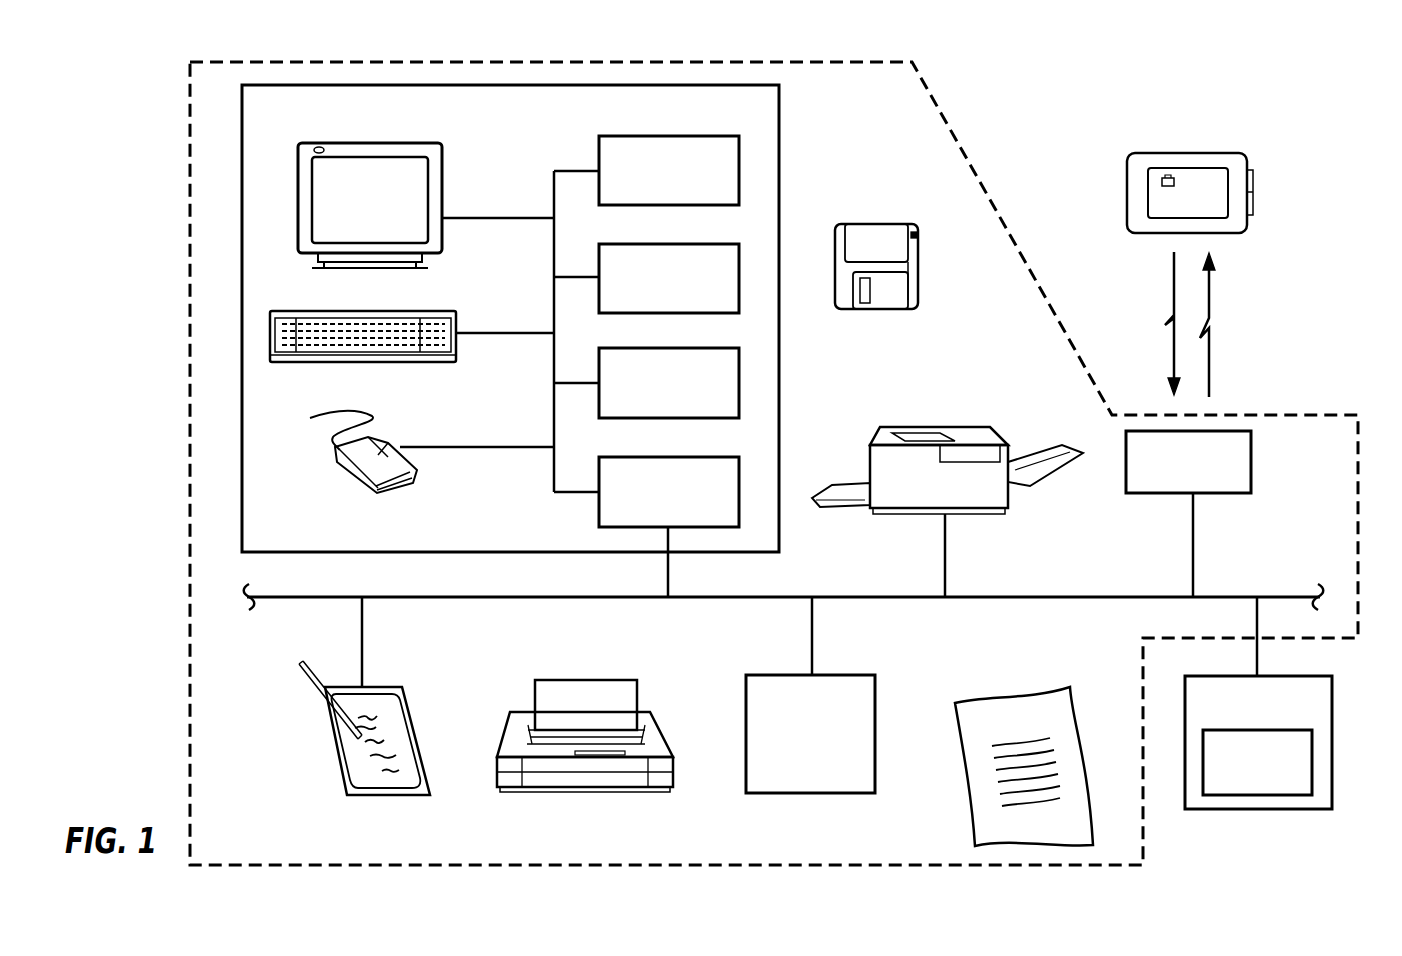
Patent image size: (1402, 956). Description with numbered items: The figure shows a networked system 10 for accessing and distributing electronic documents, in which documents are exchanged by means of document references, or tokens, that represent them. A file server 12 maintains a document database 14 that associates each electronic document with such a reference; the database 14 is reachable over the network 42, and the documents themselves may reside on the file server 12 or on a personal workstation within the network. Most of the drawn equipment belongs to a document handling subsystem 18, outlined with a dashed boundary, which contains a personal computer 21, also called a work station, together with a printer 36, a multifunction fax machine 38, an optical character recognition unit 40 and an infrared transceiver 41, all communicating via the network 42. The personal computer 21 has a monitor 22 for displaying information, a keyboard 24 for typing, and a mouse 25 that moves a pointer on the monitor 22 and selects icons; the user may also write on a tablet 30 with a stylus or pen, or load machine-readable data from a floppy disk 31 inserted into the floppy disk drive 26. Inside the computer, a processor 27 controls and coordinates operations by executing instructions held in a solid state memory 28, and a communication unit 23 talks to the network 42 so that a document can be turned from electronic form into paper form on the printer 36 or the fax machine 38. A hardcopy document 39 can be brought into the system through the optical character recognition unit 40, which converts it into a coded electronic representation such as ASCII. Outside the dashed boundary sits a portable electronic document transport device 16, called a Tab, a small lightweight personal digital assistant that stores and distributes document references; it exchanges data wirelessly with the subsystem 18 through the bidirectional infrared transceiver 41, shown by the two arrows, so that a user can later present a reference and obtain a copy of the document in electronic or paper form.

The networked system 10 is at (1308, 114).
The file server 12 is at (1332, 713).
The document database 14 is at (1312, 768).
The portable electronic document transport device 16 is at (1182, 153).
The document handling subsystem 18 is at (952, 128).
The personal computer 21 is at (779, 152).
The monitor 22 is at (398, 143).
The communication unit 23 is at (690, 457).
The keyboard 24 is at (432, 311).
The mouse 25 is at (372, 418).
The floppy disk drive 26 is at (686, 348).
The processor 27 is at (668, 136).
The solid state memory 28 is at (687, 244).
The tablet 30 is at (395, 687).
The floppy disk 31 is at (878, 224).
The printer 36 is at (650, 712).
The multifunction fax machine 38 is at (935, 427).
The document 39 is at (1010, 687).
The optical character recognition unit 40 is at (840, 675).
The infrared transceiver 41 is at (1217, 493).
The network 42 is at (468, 597).